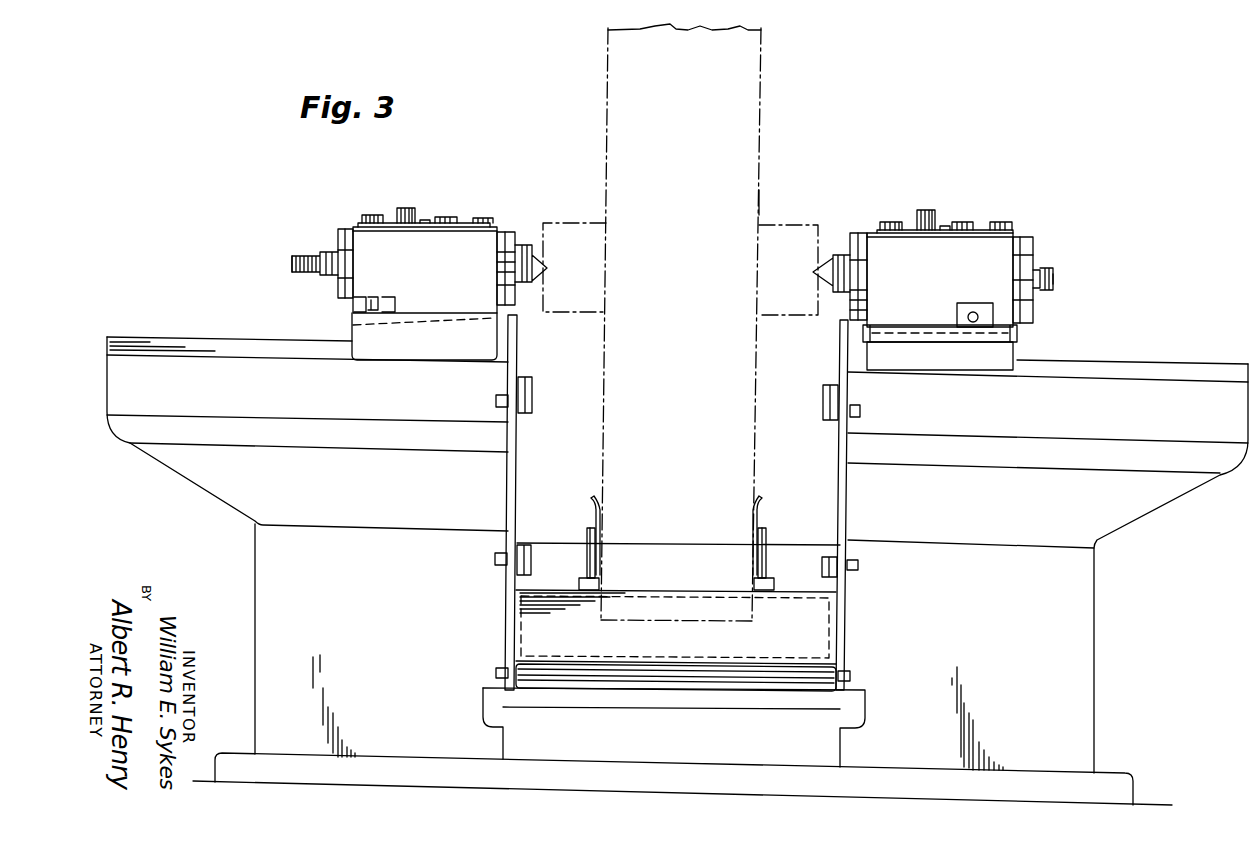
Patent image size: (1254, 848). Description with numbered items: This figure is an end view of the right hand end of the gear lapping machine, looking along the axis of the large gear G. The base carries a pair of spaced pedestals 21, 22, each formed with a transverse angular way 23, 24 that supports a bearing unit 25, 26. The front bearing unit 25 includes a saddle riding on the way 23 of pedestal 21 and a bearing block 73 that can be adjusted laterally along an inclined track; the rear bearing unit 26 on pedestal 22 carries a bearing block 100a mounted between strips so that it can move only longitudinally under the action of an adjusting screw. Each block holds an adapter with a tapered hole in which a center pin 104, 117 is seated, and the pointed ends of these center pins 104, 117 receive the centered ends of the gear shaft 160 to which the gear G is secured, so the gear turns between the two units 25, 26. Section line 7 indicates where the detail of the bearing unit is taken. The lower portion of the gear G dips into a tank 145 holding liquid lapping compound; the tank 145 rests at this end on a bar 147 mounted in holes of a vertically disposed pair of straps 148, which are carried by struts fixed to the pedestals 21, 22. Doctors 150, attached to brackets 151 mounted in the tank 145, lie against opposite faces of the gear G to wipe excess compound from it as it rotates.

The large gear G is at (763, 126).
The gear shaft 160 is at (765, 220).
The tapered center pin 104 is at (540, 262).
The center pin 117 is at (820, 273).
The bearing unit 25 is at (320, 221).
The rear bearing unit 26 is at (1037, 234).
The bearing block 73 is at (419, 284).
The bearing block 100a is at (990, 265).
The transverse angular way 23 is at (263, 338).
The transverse angular way 24 is at (1168, 343).
The pedestal 21 is at (307, 545).
The pedestal 22 is at (1048, 568).
The section line 7- 7 is at (290, 262).
The doctor 150 is at (768, 508).
The bracket 151 is at (770, 528).
The strap 148 is at (505, 637).
The tank 145 is at (818, 636).
The bar 147 is at (850, 678).